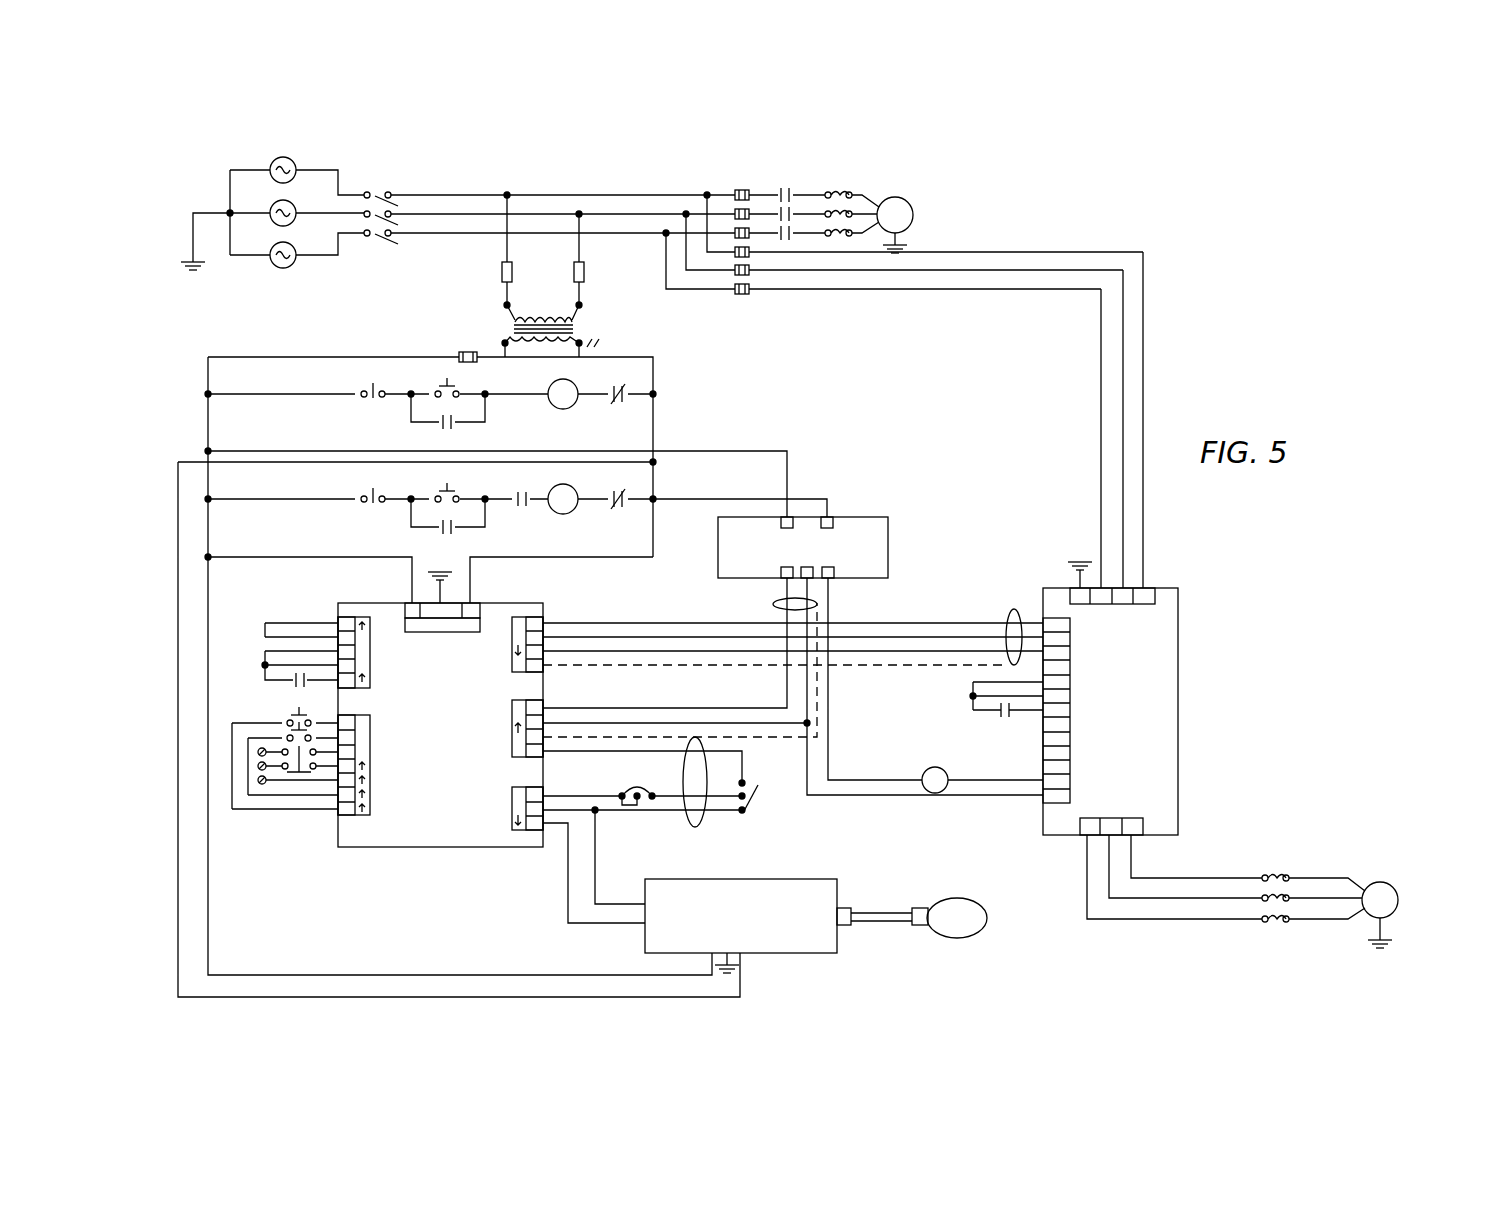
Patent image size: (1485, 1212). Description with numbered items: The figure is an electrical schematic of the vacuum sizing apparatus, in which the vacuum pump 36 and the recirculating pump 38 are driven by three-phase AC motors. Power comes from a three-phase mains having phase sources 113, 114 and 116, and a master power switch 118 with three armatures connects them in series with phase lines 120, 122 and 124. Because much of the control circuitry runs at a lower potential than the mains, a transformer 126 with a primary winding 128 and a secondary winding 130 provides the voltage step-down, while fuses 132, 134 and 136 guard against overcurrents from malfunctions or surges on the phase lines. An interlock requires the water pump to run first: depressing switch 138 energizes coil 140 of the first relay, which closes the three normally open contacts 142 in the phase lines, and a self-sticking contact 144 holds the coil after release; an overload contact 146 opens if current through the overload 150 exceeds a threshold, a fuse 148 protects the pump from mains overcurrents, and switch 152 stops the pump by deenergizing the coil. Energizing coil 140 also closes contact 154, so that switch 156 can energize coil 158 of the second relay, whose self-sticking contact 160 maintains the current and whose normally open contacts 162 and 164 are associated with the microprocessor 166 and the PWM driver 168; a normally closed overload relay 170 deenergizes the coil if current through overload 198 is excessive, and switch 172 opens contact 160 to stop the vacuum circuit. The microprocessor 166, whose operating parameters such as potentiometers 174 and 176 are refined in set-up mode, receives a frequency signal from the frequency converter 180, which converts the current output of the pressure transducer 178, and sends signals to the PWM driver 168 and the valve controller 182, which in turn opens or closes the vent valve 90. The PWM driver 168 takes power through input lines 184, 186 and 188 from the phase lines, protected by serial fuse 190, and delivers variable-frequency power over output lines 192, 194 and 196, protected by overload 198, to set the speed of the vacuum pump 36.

The vacuum pump 36 is at (1381, 880).
The recirculating pump 38 is at (915, 203).
The vent valve 90 is at (975, 900).
The phase source 113 is at (271, 160).
The phase source 114 is at (262, 205).
The phase source 116 is at (271, 262).
The master power switch 118 is at (390, 176).
The phase line 120 is at (597, 194).
The phase line 122 is at (626, 213).
The phase line 124 is at (598, 236).
The transformer 126 is at (517, 324).
The primary winding 128 is at (548, 318).
The secondary winding 130 is at (552, 345).
The fuse 132 is at (459, 354).
The fuse 134 is at (501, 272).
The fuse 136 is at (586, 275).
The switch 138 is at (446, 386).
The coil 140 is at (553, 406).
The normally open contacts 142 is at (793, 178).
The self sticking contact 144 is at (447, 430).
The overload contact 146 is at (616, 386).
The fuse 148 is at (741, 189).
The overload 150 is at (833, 190).
The switch 152 is at (362, 397).
The normally open contact 154 is at (521, 508).
The switch 156 is at (440, 491).
The coil 158 is at (563, 514).
The self-sticking contact 160 is at (447, 535).
The normally open contact 162 is at (300, 688).
The normally open contact 164 is at (1008, 718).
The microprocessor 166 is at (418, 848).
The pulse width modulated driver 168 is at (1180, 620).
The overload relay 170 is at (619, 492).
The switch 172 is at (363, 503).
The potentiometer 174 is at (622, 781).
The potentiometer 176 is at (754, 801).
The pressure transducer 178 is at (930, 767).
The frequency converter 180 is at (890, 548).
The valve controller 182 is at (812, 878).
The power input line 184 is at (1082, 252).
The power input line 186 is at (980, 273).
The power input line 188 is at (1032, 291).
The fuse 190 is at (745, 297).
The power output line 192 is at (1232, 877).
The power output line 194 is at (1152, 921).
The power output line 196 is at (1198, 922).
The overload 198 is at (1285, 876).